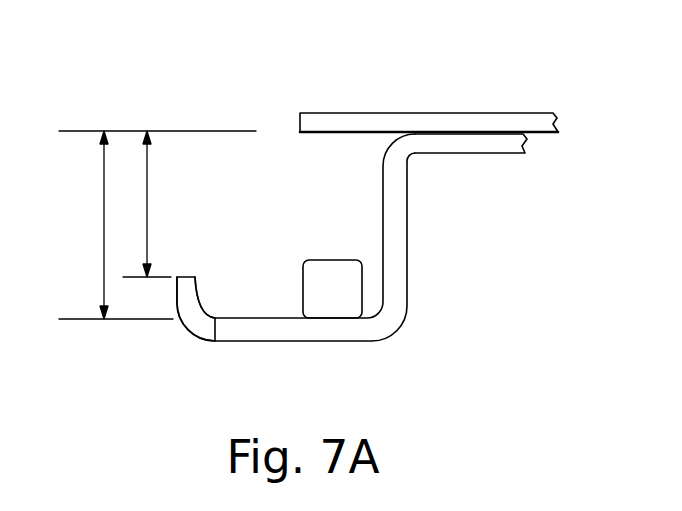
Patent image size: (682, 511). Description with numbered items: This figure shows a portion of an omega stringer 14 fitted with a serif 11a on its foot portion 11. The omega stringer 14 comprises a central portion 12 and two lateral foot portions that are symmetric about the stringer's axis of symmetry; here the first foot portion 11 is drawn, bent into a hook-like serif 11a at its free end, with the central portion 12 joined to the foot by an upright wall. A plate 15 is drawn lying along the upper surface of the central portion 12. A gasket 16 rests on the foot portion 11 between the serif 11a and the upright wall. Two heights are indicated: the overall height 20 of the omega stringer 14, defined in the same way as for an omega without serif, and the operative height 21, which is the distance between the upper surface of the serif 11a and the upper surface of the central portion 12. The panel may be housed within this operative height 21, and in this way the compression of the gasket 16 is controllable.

The first foot portion 11 is at (323, 332).
The serif 11a is at (195, 310).
The central portion 12 is at (502, 147).
The omega stringer 14 is at (566, 140).
The plate 15 is at (397, 121).
The gasket 16 is at (357, 283).
The overall height 20 is at (104, 225).
The operative height 21 is at (147, 203).